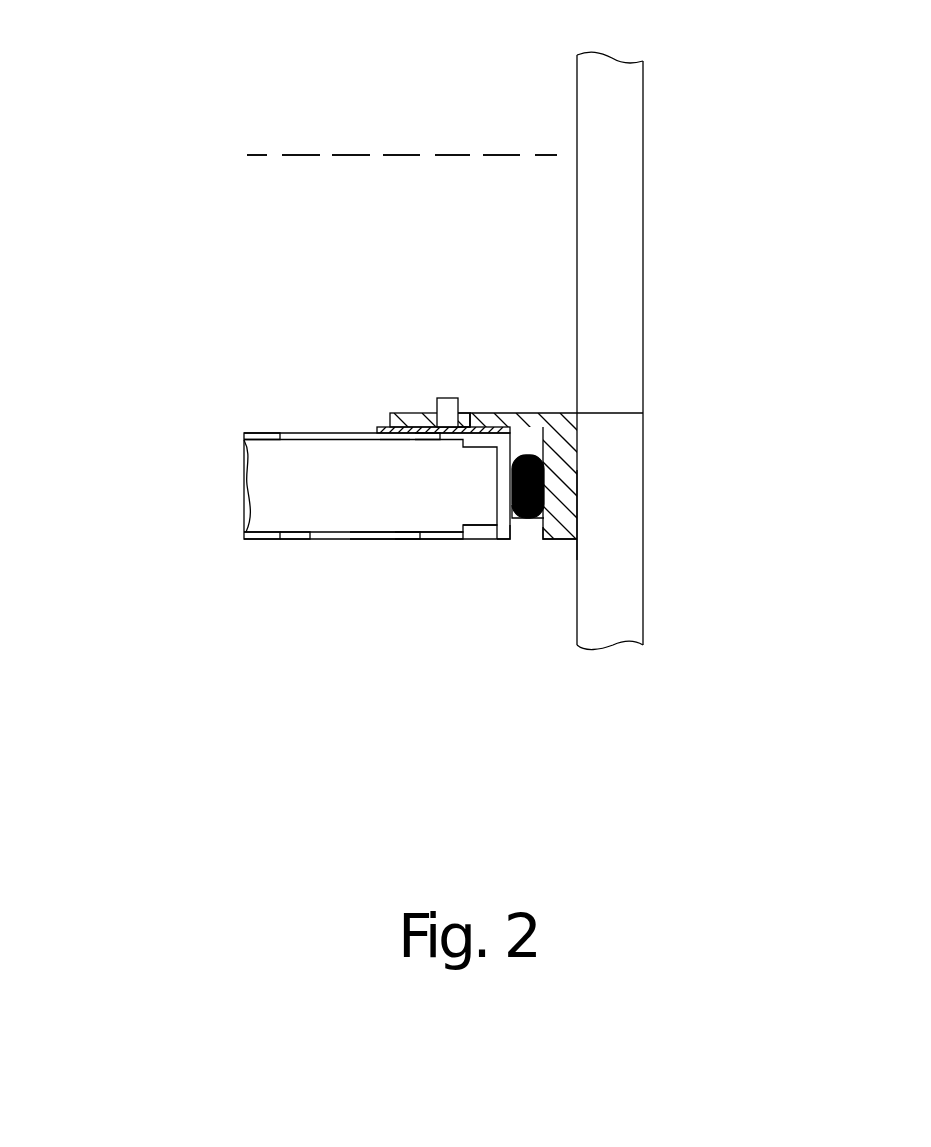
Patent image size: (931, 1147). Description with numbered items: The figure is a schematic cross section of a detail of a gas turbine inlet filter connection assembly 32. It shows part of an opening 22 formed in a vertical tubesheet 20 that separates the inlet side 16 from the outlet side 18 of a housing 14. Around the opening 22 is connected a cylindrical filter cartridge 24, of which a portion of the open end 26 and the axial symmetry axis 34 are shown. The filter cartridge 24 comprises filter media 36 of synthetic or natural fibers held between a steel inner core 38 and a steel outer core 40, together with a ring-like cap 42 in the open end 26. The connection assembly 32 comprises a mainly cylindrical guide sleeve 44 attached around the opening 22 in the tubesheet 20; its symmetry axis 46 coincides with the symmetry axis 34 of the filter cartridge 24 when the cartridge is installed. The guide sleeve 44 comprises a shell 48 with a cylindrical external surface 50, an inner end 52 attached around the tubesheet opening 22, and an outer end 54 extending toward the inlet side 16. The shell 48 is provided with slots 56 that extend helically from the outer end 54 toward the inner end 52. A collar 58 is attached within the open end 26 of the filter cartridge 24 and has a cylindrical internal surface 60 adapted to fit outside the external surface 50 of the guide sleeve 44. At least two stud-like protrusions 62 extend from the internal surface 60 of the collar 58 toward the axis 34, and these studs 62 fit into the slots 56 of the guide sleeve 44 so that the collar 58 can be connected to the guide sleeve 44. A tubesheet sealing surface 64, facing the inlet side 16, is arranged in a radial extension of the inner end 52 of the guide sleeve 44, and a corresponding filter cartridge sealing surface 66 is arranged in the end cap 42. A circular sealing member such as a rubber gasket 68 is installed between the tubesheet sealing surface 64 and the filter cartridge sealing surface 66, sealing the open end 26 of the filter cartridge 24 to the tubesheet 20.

The housing 14 is at (840, 206).
The inlet side 16 is at (400, 92).
The outlet side 18 is at (787, 99).
The tubesheet 20 is at (610, 527).
The opening 22 is at (628, 335).
The filter cartridge 24 is at (295, 541).
The open end 26 is at (407, 541).
The gas turbine inlet filter connection assembly 32 is at (241, 101).
The axial symmetry axis 34 is at (320, 155).
The filter media 36 is at (255, 500).
The inner core 38 is at (257, 432).
The outer core 40 is at (257, 542).
The ring-like cap 42 is at (478, 540).
The guide sleeve 44 is at (543, 413).
The symmetry axis 46 is at (320, 155).
The shell 48 is at (513, 413).
The cylindrical external surface 50 is at (393, 440).
The inner end 52 is at (573, 427).
The outer end 54 is at (398, 412).
The slots 56 is at (460, 412).
The collar 58 is at (427, 435).
The cylindrical internal surface 60 is at (357, 540).
The stud-like protrusions 62 is at (447, 398).
The tubesheet sealing surface 64 is at (537, 535).
The filter cartridge sealing surface 66 is at (507, 540).
The rubber gasket 68 is at (522, 520).